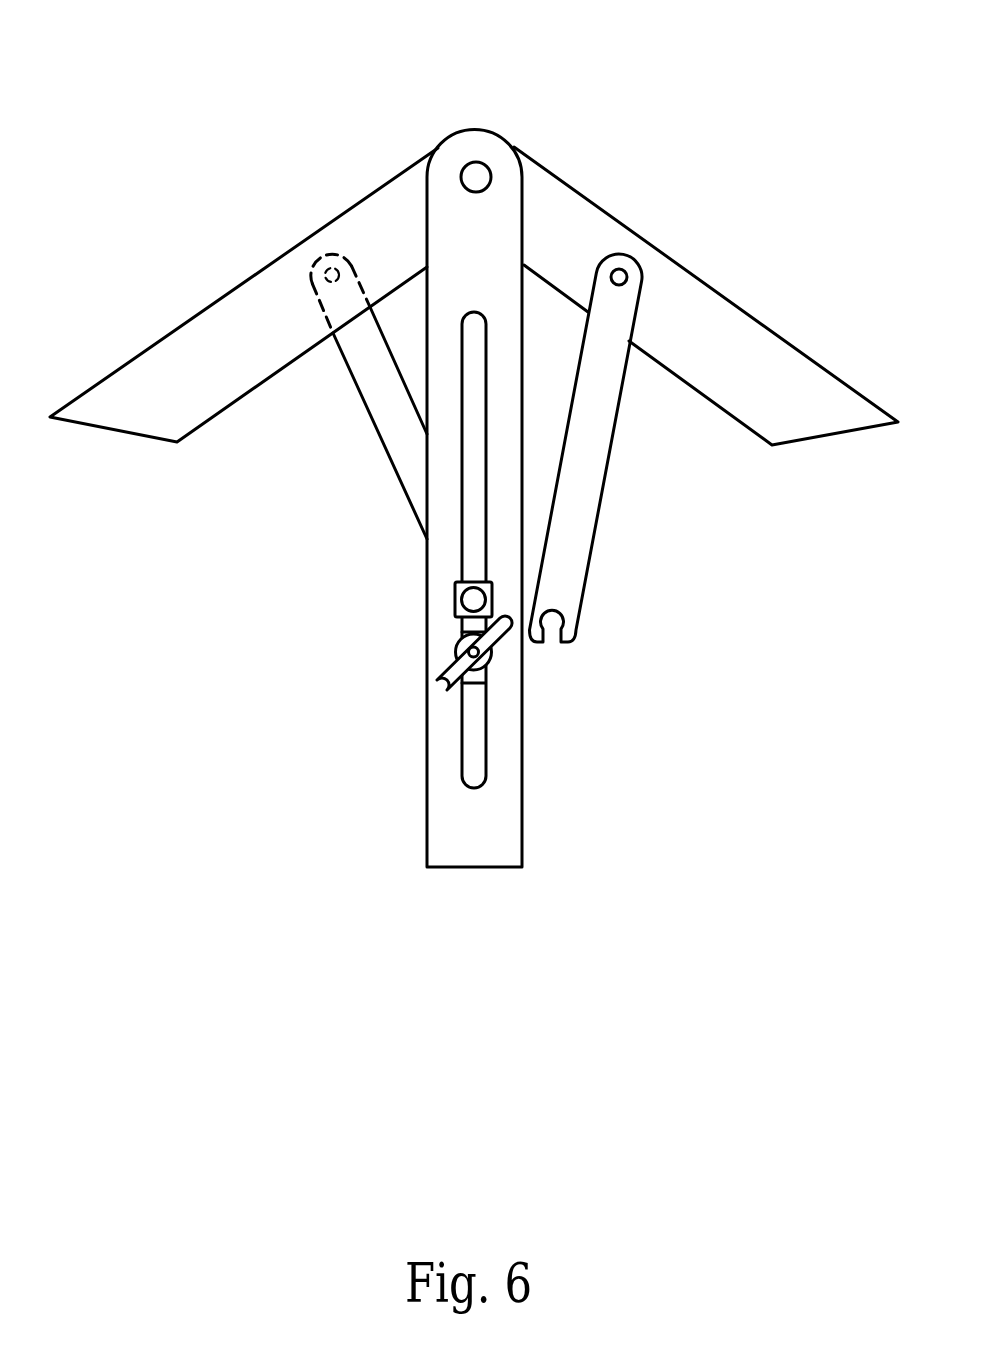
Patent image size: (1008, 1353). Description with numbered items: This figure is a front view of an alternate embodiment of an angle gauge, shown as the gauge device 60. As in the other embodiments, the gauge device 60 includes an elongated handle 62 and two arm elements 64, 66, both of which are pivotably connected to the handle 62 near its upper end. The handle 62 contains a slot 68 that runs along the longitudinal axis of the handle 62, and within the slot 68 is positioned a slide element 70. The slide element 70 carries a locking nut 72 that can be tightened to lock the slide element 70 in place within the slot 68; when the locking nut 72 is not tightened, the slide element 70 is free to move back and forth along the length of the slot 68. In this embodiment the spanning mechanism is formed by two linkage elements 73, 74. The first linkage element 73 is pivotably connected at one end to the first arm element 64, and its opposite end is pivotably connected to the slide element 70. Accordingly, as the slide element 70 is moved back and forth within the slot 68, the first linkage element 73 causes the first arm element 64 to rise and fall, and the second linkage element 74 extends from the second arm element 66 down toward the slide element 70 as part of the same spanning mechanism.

The gauge device 60 is at (474, 433).
The elongated handle 62 is at (512, 833).
The first arm element 64 is at (193, 408).
The second arm element 66 is at (755, 410).
The slot 68 is at (470, 570).
The slide element 70 is at (467, 662).
The locking nut 72 is at (493, 634).
The first linkage element 73 is at (388, 430).
The second linkage element 74 is at (582, 548).